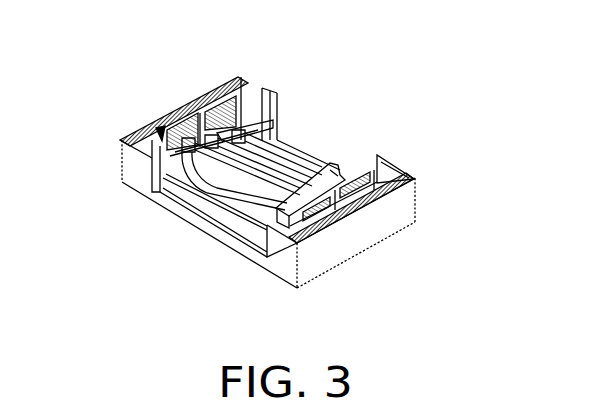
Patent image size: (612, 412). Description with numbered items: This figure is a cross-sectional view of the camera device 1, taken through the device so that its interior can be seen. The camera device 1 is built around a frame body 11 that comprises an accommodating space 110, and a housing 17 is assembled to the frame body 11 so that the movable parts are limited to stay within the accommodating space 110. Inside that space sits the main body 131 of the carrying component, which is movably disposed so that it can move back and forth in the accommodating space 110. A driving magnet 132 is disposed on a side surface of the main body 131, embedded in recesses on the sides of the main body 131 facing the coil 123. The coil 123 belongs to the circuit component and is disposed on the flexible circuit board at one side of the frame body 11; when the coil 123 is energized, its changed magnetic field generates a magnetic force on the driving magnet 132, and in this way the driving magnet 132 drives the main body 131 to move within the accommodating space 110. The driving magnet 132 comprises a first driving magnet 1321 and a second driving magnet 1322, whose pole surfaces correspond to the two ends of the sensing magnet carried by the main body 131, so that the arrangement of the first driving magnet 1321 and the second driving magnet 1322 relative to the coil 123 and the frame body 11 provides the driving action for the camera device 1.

The camera device 1 is at (553, 75).
The frame body 11 is at (238, 232).
The housing 17 is at (132, 165).
The accommodating space 110 is at (158, 130).
The coil 123 is at (215, 92).
The main body 131 is at (175, 162).
The driving magnet 132 is at (390, 305).
The first driving magnet 1321 is at (333, 218).
The second driving magnet 1322 is at (348, 218).